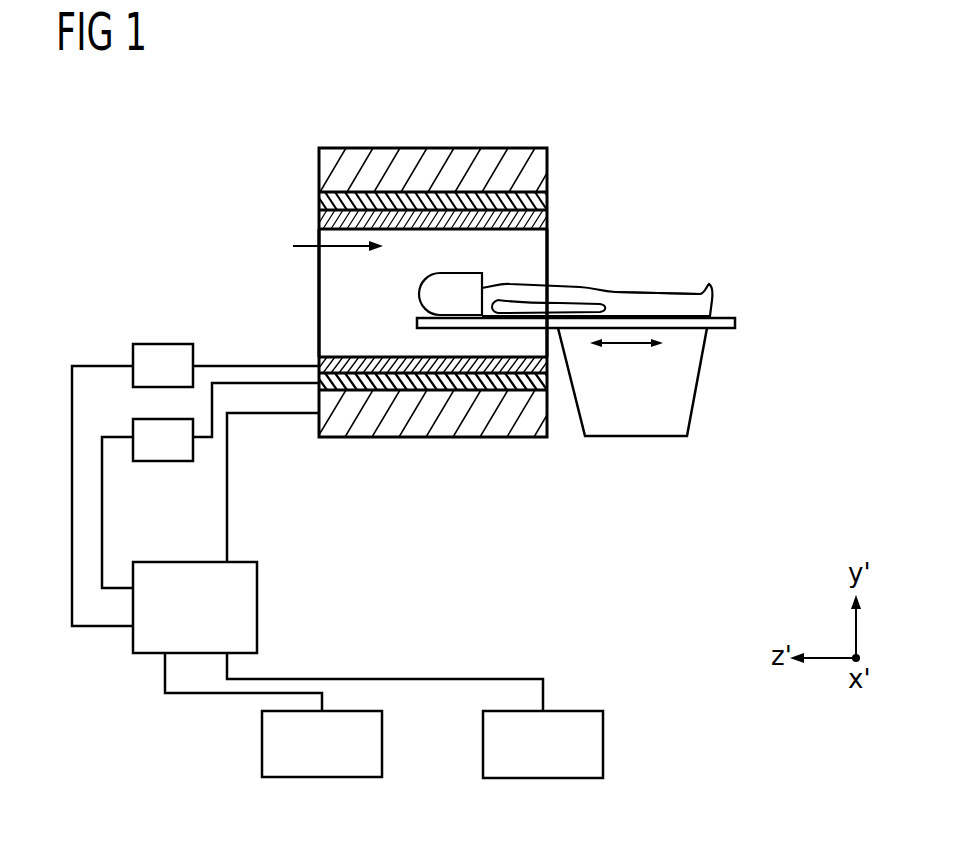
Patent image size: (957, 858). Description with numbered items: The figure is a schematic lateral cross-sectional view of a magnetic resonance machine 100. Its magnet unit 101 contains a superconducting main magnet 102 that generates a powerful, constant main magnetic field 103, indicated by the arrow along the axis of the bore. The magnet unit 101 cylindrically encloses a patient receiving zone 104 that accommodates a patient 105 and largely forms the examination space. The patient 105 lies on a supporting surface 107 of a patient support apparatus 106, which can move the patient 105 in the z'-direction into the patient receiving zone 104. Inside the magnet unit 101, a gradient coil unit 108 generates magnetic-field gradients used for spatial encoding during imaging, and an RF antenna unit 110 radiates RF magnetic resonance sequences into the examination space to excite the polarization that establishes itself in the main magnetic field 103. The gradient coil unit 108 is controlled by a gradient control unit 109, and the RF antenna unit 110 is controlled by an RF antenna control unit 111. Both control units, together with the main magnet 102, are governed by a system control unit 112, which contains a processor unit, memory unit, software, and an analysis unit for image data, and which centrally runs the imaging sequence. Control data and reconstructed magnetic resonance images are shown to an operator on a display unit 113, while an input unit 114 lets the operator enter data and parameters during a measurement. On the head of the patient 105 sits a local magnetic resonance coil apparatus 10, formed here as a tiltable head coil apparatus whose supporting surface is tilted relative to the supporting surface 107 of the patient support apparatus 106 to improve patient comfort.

The magnetic resonance coil apparatus 10 is at (447, 254).
The magnetic resonance machine 100 is at (448, 244).
The magnet unit 101 is at (434, 244).
The main magnet 102 is at (547, 173).
The main magnetic field 103 is at (303, 247).
The patient receiving zone 104 is at (538, 266).
The patient 105 is at (668, 312).
The patient support apparatus 106 is at (716, 414).
The supporting surface 107 is at (722, 318).
The gradient coil unit 108 is at (319, 202).
The gradient control unit 109 is at (163, 461).
The RF antenna unit 110 is at (319, 222).
The RF antenna control unit 111 is at (178, 344).
The system control unit 112 is at (257, 607).
The display unit 113 is at (262, 742).
The input unit 114 is at (603, 742).